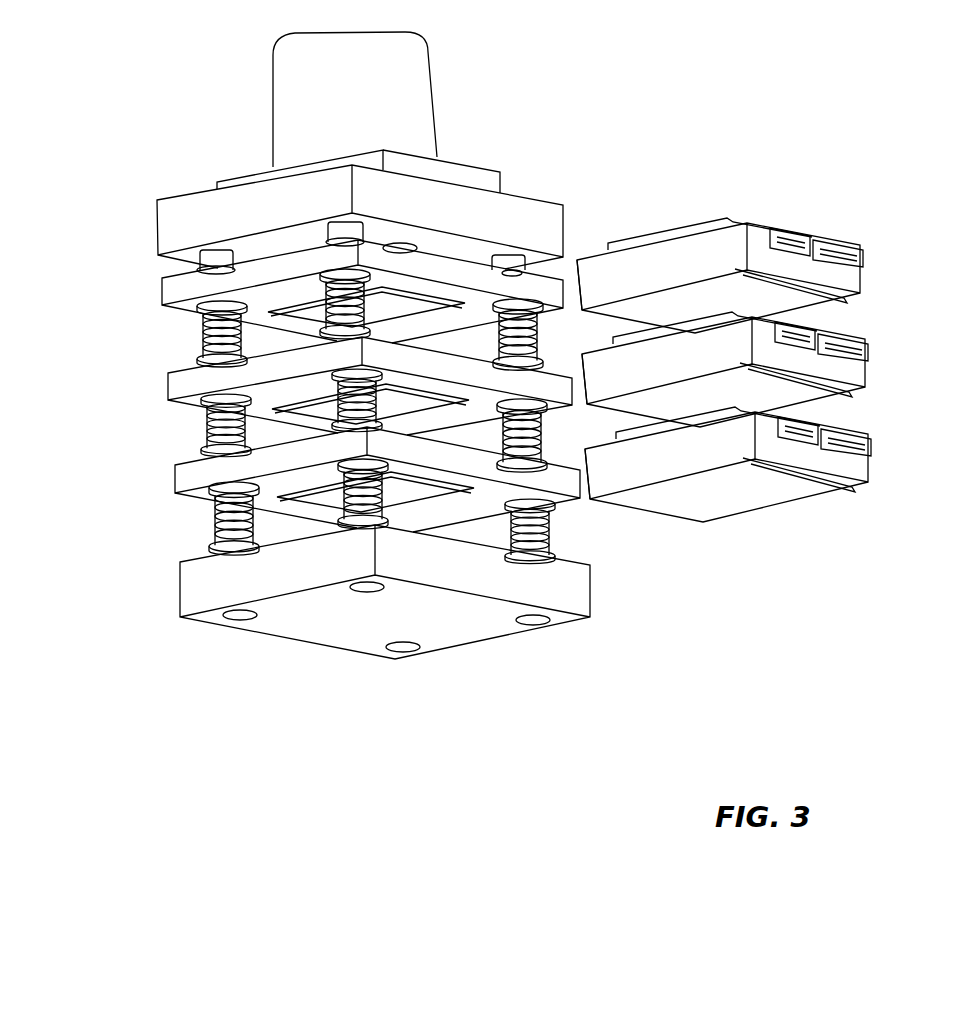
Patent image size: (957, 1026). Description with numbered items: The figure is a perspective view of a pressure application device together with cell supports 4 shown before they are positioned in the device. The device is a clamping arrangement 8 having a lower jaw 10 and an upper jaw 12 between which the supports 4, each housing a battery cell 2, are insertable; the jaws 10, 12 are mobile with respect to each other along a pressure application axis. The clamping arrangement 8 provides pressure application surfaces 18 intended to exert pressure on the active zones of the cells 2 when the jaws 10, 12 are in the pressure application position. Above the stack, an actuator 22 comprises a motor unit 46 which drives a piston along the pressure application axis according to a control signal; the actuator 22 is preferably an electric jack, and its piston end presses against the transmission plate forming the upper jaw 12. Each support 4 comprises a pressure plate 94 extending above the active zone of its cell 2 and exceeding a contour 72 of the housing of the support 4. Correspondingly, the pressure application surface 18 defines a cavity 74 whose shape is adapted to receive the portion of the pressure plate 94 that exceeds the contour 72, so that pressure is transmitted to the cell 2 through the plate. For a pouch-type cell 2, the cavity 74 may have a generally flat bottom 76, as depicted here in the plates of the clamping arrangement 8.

The clamping arrangement 8 is at (147, 98).
The motor unit 46 is at (422, 67).
The actuator 22 is at (524, 105).
The upper jaw 12 is at (145, 288).
The pressure application surface 18 is at (191, 402).
The cavity 74 is at (414, 487).
The flat bottom 76 is at (330, 492).
The lower jaw 10 is at (612, 602).
The support 4 is at (753, 503).
The contour 72 is at (593, 258).
The pressure plate 94 is at (680, 227).
The battery cell 2 is at (825, 258).